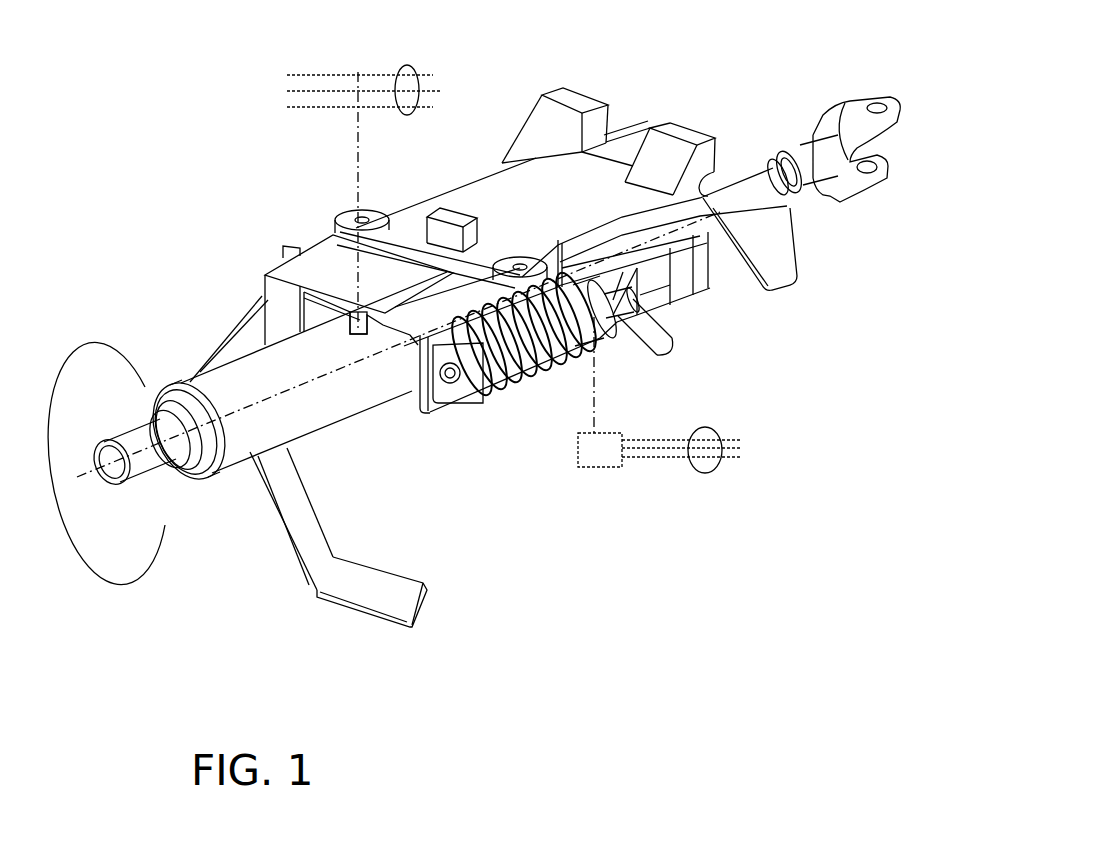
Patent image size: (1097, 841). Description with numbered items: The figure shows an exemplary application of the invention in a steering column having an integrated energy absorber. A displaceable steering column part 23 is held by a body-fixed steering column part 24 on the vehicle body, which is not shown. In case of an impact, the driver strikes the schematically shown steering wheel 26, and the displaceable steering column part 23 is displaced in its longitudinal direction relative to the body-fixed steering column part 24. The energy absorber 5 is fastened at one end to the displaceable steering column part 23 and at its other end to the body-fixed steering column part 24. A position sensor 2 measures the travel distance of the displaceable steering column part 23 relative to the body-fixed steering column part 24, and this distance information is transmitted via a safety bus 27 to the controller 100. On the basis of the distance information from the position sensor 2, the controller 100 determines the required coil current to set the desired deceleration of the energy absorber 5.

The position sensor 2 is at (347, 308).
The energy absorber 5 is at (509, 398).
The displaceable steering column part 23 is at (295, 362).
The body-fixed steering column part 24 is at (463, 198).
The steering wheel 26 is at (150, 568).
The safety bus 27 is at (418, 67).
The controller 100 is at (614, 470).